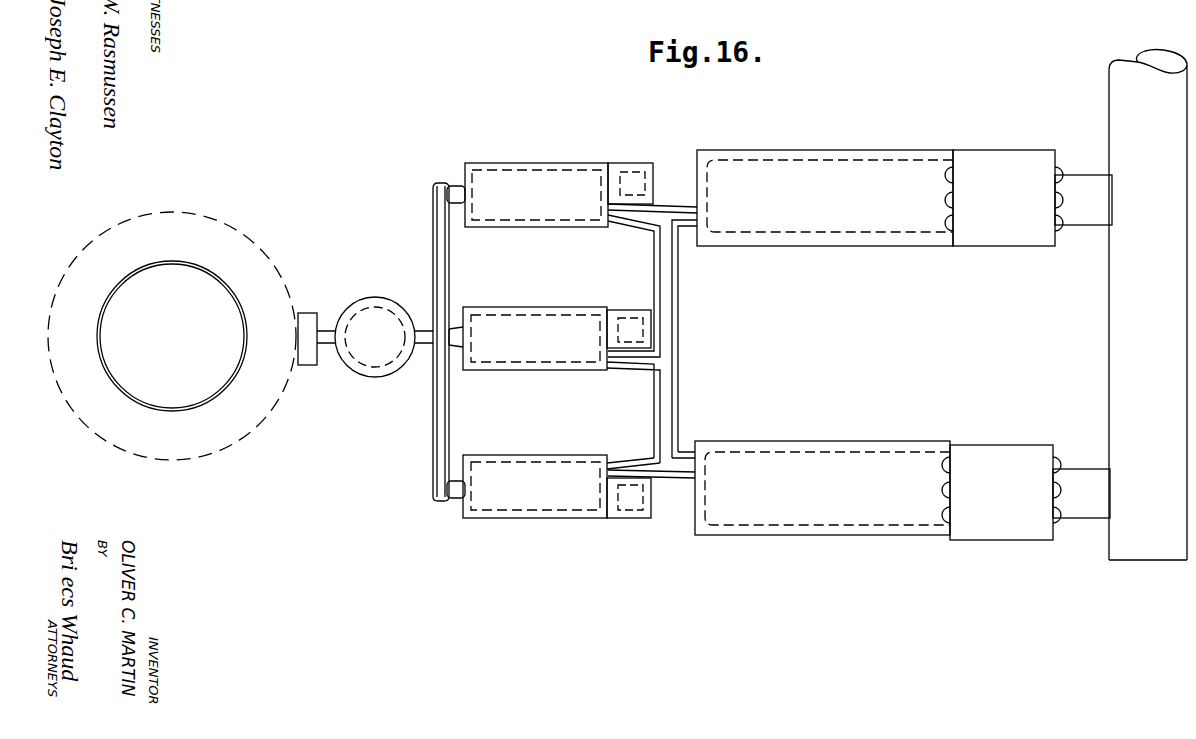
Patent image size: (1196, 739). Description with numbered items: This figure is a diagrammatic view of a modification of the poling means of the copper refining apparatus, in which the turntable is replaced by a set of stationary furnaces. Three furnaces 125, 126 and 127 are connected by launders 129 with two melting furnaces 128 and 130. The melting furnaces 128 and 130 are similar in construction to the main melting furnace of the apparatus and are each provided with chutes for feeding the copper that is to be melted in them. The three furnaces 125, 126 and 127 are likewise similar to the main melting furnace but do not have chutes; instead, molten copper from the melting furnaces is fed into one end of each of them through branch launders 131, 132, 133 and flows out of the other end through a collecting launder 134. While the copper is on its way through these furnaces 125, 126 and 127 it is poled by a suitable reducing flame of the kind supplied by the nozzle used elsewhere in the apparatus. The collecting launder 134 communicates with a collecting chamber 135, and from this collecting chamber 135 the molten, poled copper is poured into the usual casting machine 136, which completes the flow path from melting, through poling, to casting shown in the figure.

The furnace 125 is at (549, 486).
The furnace 126 is at (557, 338).
The furnace 127 is at (550, 195).
The melting furnace 128 is at (902, 490).
The launders 129 is at (678, 331).
The melting furnace 130 is at (904, 198).
The branch launder 131 is at (648, 460).
The branch launder 132 is at (638, 366).
The branch launder 133 is at (636, 221).
The collecting launder 134 is at (437, 270).
The collecting chamber 135 is at (377, 372).
The casting machine 136 is at (272, 410).